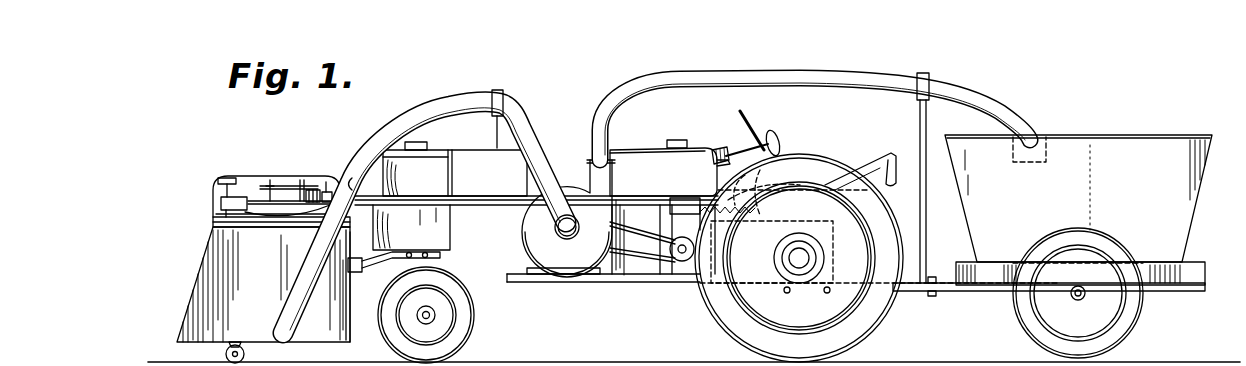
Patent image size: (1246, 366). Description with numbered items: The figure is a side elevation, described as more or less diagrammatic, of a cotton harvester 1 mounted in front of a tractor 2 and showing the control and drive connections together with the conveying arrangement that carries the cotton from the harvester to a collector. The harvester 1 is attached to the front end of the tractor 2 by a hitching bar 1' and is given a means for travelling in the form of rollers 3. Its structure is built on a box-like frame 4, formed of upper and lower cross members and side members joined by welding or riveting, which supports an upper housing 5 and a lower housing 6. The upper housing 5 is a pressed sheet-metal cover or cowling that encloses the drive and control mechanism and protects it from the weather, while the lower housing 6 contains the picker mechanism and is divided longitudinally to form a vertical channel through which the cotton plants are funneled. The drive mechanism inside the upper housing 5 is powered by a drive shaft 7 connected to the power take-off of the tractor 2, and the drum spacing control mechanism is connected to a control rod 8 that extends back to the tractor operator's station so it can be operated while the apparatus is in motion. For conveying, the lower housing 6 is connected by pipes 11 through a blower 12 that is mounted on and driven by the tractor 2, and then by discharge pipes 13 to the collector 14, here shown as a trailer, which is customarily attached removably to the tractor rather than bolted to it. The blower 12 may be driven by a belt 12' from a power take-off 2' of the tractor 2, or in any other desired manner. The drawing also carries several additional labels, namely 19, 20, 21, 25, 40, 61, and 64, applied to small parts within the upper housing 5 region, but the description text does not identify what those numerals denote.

The harvester 1 is at (258, 284).
The hitching bar 1' is at (394, 267).
The tractor 2 is at (670, 158).
The power take-off 2' is at (682, 239).
The rollers 3 is at (245, 354).
The box-like frame 4 is at (270, 226).
The upper housing 5 is at (239, 176).
The lower housing 6 is at (343, 312).
The drive shaft 7 is at (491, 208).
The control rod 8 is at (356, 184).
The pipes 11 is at (458, 108).
The blower 12 is at (573, 234).
The belt 12' is at (642, 234).
The discharge pipes 13 is at (792, 75).
The collector 14 is at (1188, 210).
The shaft 19 is at (270, 180).
The bearing 20 is at (315, 190).
The coupling 21 is at (331, 190).
The mounting bracket 25 is at (223, 178).
The motor 40 is at (220, 203).
The link 61 is at (289, 192).
The lever 64 is at (301, 180).